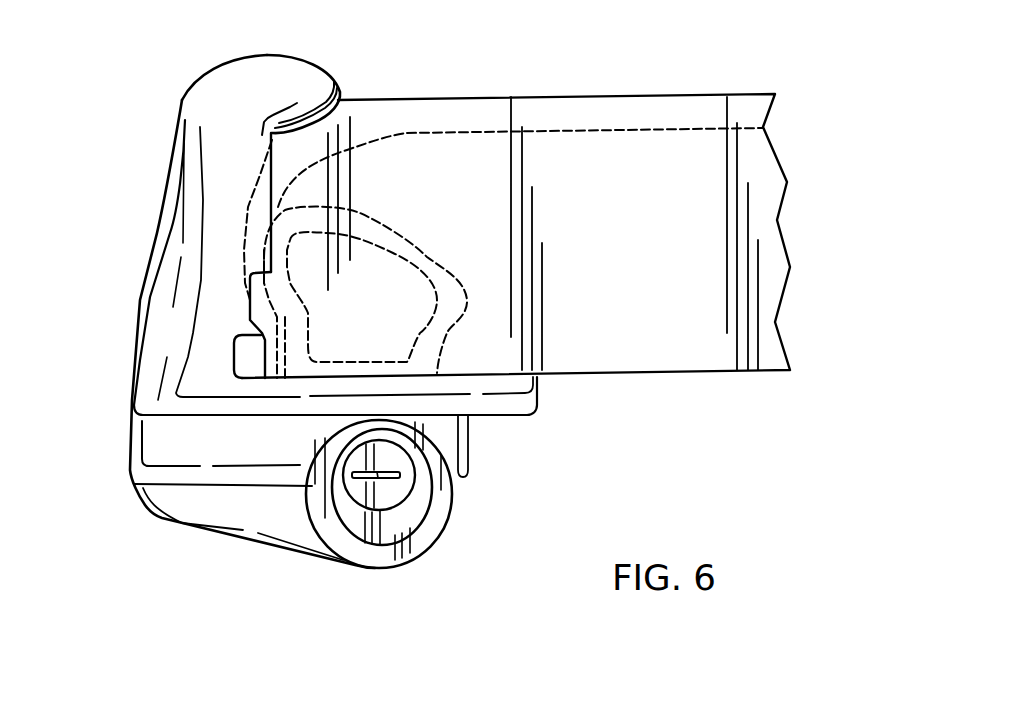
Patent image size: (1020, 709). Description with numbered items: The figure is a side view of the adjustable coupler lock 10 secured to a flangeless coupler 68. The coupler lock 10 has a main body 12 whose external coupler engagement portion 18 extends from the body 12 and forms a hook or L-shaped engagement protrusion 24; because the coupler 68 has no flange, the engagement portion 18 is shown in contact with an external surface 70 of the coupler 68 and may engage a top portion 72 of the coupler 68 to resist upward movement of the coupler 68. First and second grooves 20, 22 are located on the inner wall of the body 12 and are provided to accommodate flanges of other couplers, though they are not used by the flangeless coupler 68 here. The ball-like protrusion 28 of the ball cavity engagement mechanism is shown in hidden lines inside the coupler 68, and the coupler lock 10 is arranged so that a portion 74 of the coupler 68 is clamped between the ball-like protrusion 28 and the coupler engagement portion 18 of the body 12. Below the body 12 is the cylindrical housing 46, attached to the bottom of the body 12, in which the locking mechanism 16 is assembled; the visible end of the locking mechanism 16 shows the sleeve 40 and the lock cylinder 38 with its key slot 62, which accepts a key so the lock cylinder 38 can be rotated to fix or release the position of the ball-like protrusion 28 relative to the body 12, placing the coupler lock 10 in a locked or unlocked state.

The coupler lock 10 is at (107, 137).
The main body 12 is at (160, 243).
The locking mechanism 16 is at (340, 589).
The external coupler engagement portion 18 is at (223, 103).
The first groove 20 is at (241, 357).
The second groove 22 is at (250, 297).
The engagement protrusion 24 is at (292, 72).
The ball-like protrusion 28 is at (405, 250).
The lock cylinder 38 is at (387, 491).
The sleeve 40 is at (393, 520).
The cylindrical housing 46 is at (403, 560).
The key slot 62 is at (390, 446).
The flangeless coupler 68 is at (667, 114).
The external surface 70 is at (348, 117).
The top portion 72 is at (309, 136).
The portion of the coupler 74 is at (262, 219).